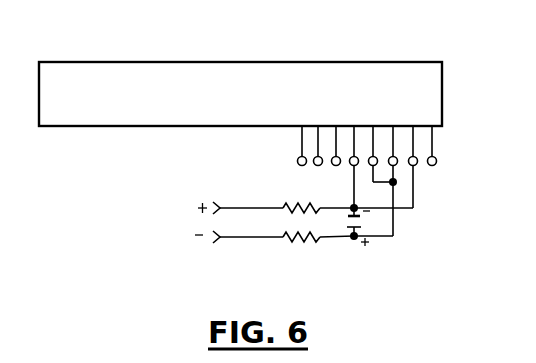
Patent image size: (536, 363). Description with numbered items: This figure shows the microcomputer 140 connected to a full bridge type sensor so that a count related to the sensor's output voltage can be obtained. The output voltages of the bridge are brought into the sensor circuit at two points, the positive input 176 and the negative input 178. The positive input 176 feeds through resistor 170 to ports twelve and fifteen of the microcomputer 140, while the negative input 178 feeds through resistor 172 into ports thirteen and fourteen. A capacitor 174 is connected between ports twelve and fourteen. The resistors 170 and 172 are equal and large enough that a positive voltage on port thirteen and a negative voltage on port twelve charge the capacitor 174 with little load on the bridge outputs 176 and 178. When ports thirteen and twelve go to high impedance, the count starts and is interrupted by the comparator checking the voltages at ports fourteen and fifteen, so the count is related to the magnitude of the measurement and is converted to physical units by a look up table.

The microcomputer 140 is at (251, 62).
The resistor 170 is at (302, 203).
The resistor 172 is at (302, 242).
The capacitor 174 is at (362, 227).
The positive input 176 is at (203, 198).
The negative input 178 is at (205, 240).